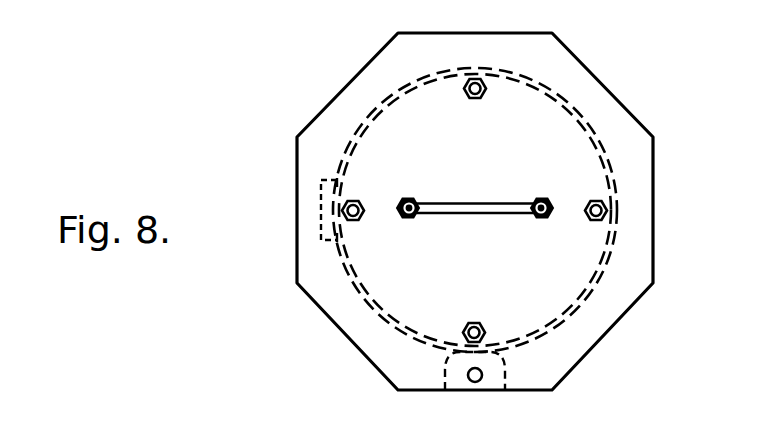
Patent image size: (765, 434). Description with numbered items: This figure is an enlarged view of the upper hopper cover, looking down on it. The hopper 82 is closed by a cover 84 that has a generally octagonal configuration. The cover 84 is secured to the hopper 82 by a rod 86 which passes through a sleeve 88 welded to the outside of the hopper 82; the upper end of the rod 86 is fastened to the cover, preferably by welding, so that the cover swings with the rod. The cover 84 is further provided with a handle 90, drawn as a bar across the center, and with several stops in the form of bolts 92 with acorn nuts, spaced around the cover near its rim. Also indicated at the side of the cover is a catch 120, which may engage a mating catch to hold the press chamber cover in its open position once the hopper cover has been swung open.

The cover 84 is at (333, 103).
The hopper 82 is at (584, 113).
The bolts 92 is at (466, 98).
The handle 90 is at (485, 202).
The catch 120 is at (316, 203).
The sleeve 88 is at (444, 386).
The rod 86 is at (477, 383).